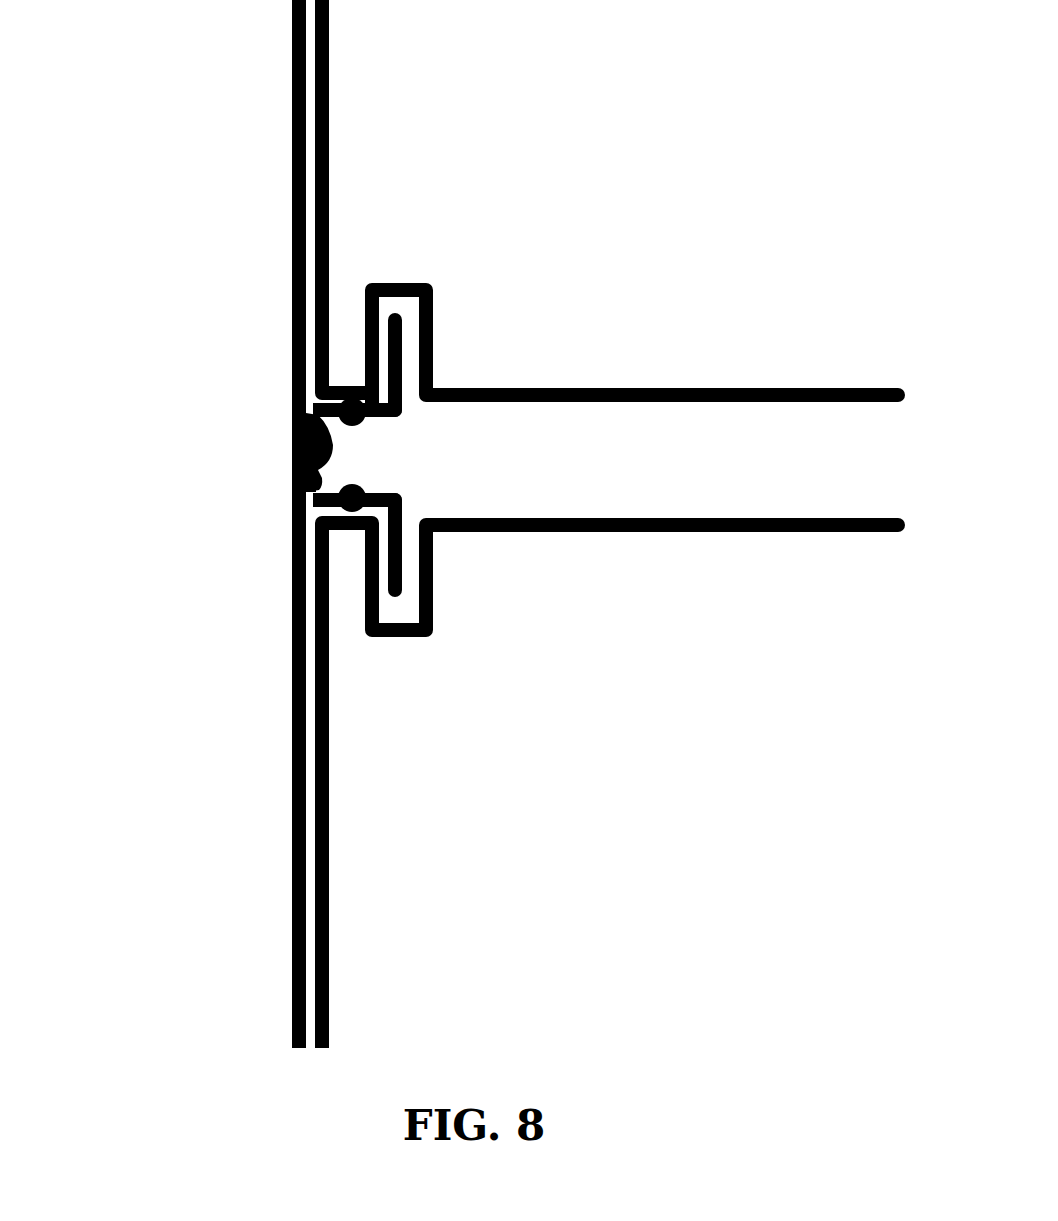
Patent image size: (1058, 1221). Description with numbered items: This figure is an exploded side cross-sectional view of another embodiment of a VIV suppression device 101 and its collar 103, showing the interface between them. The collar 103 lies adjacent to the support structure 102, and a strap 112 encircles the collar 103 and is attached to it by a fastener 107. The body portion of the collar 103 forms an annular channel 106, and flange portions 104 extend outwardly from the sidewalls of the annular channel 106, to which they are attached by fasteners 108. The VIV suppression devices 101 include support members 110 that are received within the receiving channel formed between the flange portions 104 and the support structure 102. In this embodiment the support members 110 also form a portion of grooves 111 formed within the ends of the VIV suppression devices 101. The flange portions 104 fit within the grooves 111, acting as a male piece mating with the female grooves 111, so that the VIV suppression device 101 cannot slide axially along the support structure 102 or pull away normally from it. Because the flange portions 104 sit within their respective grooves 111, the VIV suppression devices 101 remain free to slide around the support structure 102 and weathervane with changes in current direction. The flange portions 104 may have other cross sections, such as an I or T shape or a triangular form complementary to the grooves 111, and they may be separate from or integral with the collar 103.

The VIV suppression device 101 is at (629, 444).
The support structure 102 is at (282, 165).
The collar 103 is at (465, 485).
The flange portion 104 is at (410, 357).
The annular channel 106 is at (392, 489).
The fastener 107 is at (316, 435).
The fastener 108 is at (368, 474).
The support member 110 is at (305, 348).
The groove 111 is at (416, 297).
The strap 112 is at (295, 491).